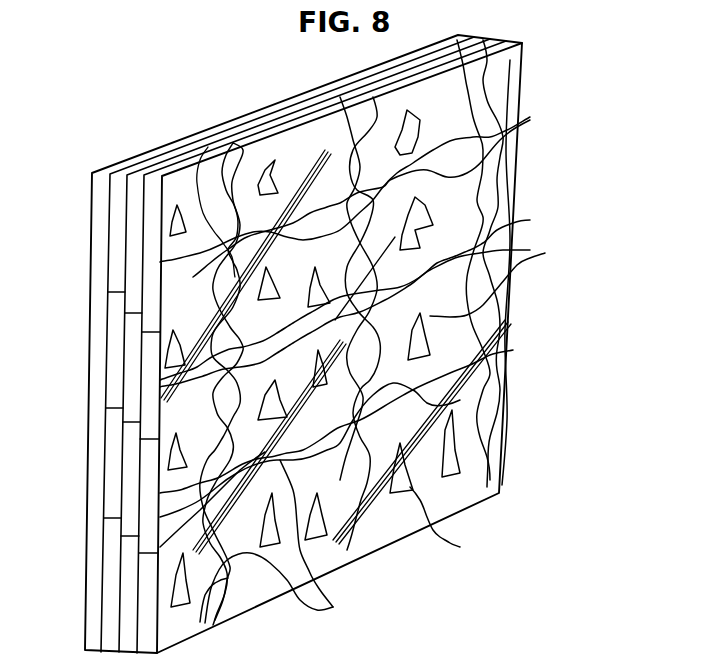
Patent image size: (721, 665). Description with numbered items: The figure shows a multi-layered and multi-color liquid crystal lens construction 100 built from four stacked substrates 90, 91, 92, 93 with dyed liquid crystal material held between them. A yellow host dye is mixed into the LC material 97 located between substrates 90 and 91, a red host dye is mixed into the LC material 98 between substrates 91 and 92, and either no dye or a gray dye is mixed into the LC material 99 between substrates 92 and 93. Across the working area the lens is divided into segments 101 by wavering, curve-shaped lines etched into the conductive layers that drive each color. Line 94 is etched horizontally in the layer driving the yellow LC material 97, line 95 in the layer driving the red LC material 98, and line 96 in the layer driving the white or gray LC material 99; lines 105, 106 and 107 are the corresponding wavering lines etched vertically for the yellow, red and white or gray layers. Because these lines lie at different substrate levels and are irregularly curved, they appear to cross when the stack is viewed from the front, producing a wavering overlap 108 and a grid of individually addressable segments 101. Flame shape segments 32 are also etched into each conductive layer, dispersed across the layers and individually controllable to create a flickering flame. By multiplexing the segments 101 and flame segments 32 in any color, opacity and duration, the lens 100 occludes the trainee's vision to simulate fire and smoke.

The flame shape segments 32 is at (455, 460).
The substrate 90 is at (100, 187).
The substrate 91 is at (118, 180).
The substrate 92 is at (137, 178).
The substrate 93 is at (150, 177).
The wavering line 94 is at (230, 262).
The wavering line 95 is at (227, 277).
The wavering line 96 is at (250, 292).
The yellow LC material 97 is at (107, 225).
The red LC material 98 is at (140, 236).
The undyed-white or dyed-gray LC material 99 is at (227, 250).
The multi-layered LC lens construction 100 is at (532, 118).
The segments 101 is at (545, 253).
The wavering line 105 is at (178, 158).
The wavering line 106 is at (208, 147).
The wavering line 107 is at (233, 143).
The wavering overlap 108 is at (333, 607).